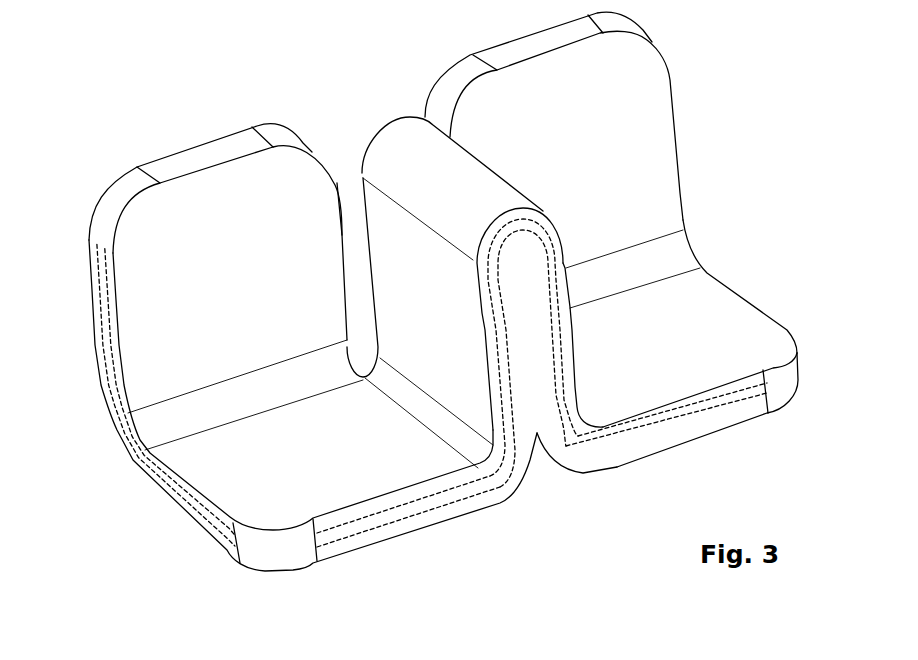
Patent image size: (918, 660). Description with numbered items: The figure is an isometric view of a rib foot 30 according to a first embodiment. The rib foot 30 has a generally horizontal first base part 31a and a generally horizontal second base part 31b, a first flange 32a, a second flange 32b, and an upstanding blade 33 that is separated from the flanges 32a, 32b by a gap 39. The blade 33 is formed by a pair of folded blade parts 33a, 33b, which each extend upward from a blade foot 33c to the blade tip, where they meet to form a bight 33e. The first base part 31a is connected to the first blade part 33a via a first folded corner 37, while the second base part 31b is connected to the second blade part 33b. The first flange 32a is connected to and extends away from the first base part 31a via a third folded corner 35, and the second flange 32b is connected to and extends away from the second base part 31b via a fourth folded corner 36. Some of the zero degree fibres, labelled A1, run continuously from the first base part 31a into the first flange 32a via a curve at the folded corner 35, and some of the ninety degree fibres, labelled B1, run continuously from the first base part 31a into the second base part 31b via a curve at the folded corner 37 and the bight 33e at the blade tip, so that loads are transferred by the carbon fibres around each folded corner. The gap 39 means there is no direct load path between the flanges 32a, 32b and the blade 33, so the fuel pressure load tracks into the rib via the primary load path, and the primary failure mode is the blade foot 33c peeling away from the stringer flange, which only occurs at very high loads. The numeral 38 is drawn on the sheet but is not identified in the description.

The rib foot 30 is at (207, 93).
The first base part 31a is at (320, 469).
The second base part 31b is at (673, 341).
The first flange 32a is at (230, 276).
The second flange 32b is at (600, 156).
The upstanding blade 33 is at (385, 155).
The first blade part 33a is at (433, 287).
The second blade part 33b is at (570, 328).
The blade foot 33c is at (542, 470).
The bight 33e is at (523, 233).
The third folded corner 35 is at (173, 413).
The fourth folded corner 36 is at (673, 253).
The first folded corner 37 is at (473, 443).
The front face 38 is at (415, 515).
The gap 39 is at (350, 215).
The 0 degree fibres A1 is at (185, 502).
The 90 degree fibres B1 is at (708, 400).